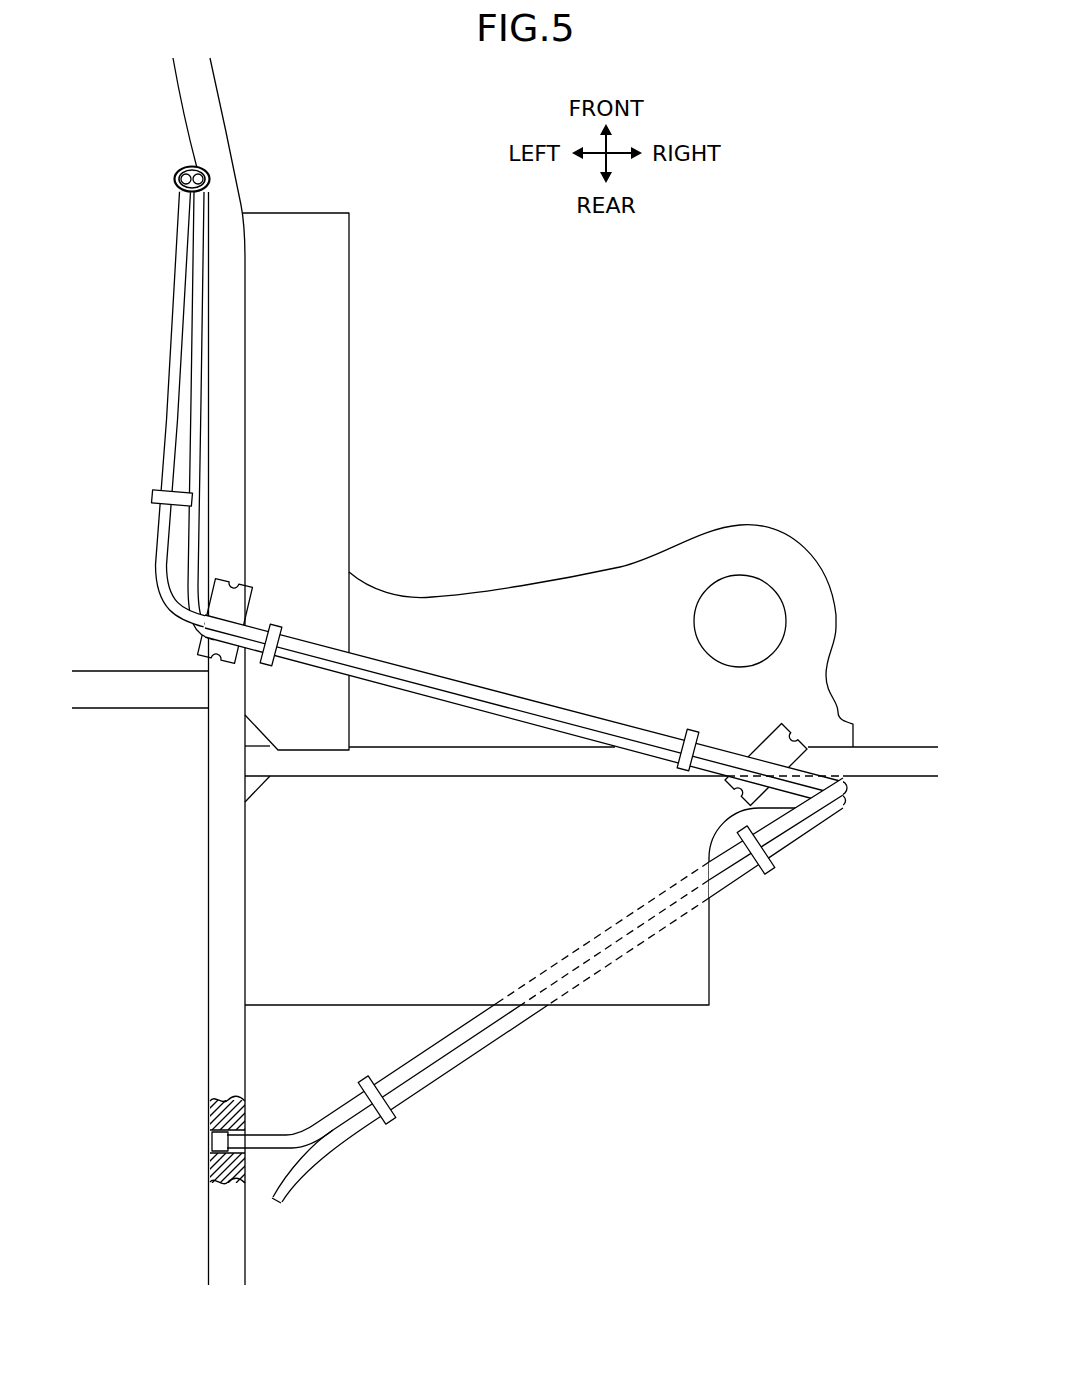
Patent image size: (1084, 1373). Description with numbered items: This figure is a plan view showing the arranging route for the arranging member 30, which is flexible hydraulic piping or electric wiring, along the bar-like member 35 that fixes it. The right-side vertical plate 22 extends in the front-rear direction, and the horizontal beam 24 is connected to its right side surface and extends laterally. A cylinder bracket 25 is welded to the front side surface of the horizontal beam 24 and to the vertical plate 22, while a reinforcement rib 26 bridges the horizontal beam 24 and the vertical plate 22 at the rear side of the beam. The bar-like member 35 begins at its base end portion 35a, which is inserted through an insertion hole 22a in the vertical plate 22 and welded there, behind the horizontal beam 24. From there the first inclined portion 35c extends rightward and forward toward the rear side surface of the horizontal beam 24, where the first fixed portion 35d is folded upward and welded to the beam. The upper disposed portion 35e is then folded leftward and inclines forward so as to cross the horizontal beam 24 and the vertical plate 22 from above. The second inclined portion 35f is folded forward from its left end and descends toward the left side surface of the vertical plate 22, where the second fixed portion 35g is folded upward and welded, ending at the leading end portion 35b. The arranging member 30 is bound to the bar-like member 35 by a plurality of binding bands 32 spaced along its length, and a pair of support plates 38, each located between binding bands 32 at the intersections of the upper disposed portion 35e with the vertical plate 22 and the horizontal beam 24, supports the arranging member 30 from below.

The vertical plate 22 is at (230, 166).
The insertion hole 22a is at (213, 1137).
The horizontal beam 24 is at (898, 745).
The cylinder bracket 25 is at (740, 533).
The reinforcement rib 26 is at (666, 1008).
The arranging member 30 is at (302, 1165).
The binding band 32 is at (176, 178).
The bar-like member 35 is at (517, 640).
The base end portion 35a is at (346, 1111).
The leading end portion 35b is at (200, 168).
The first inclined portion 35c is at (458, 1045).
The first fixed portion 35d is at (853, 782).
The upper disposed portion 35e is at (385, 683).
The second inclined portion 35f is at (190, 408).
The second fixed portion 35g is at (195, 235).
The support plate 38 is at (235, 588).